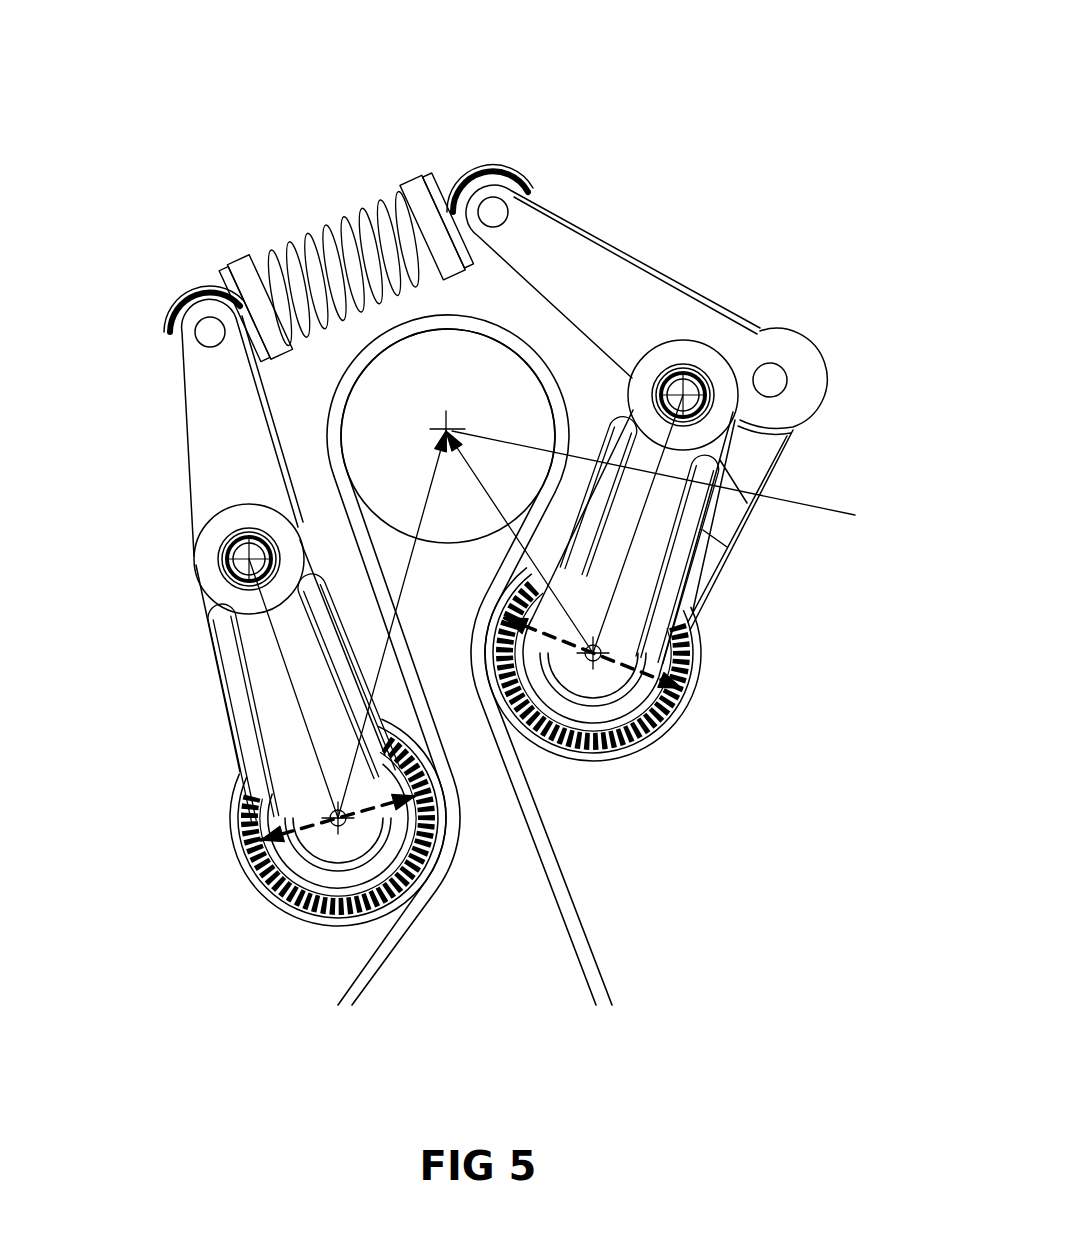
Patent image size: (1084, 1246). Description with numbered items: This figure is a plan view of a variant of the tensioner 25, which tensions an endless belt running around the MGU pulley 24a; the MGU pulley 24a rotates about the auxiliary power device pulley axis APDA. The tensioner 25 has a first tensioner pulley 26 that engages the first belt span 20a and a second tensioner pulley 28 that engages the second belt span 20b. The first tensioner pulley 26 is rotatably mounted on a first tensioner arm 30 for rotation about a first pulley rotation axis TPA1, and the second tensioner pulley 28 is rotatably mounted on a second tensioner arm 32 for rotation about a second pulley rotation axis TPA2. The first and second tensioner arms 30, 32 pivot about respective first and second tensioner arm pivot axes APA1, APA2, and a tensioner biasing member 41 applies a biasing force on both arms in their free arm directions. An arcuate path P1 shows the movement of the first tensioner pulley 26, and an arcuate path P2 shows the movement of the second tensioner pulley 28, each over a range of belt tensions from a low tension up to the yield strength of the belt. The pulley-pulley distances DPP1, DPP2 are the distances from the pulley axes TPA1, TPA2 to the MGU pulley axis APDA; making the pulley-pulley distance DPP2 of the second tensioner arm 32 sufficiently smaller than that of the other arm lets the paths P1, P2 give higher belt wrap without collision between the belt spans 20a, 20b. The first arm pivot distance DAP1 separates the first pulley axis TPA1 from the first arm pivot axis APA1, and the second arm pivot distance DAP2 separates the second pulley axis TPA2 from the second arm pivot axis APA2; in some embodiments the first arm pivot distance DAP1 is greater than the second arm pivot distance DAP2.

The tensioner 25 is at (314, 118).
The tensioner biasing member 41 is at (322, 232).
The second tensioner arm 32 is at (555, 232).
The MGU pulley 24a is at (520, 380).
The first tensioner arm 30 is at (200, 455).
The first tensioner pulley 26 is at (240, 852).
The second tensioner pulley 28 is at (683, 723).
The first belt span 20a is at (367, 977).
The second belt span 20b is at (598, 937).
The first tensioner arm pivot axis APA1 is at (249, 559).
The second tensioner arm pivot axis APA2 is at (683, 395).
The auxiliary power device pulley axis APDA is at (699, 473).
The arcuate path P1 is at (252, 797).
The arcuate path P2 is at (690, 637).
The first pulley rotation axis TPA1 is at (345, 822).
The second pulley rotation axis TPA2 is at (593, 655).
The pulley-pulley distance DPP1 is at (392, 624).
The pulley-pulley distance DPP2 is at (519, 542).
The first arm pivot distance DAP1 is at (298, 688).
The second arm pivot distance DAP2 is at (630, 524).